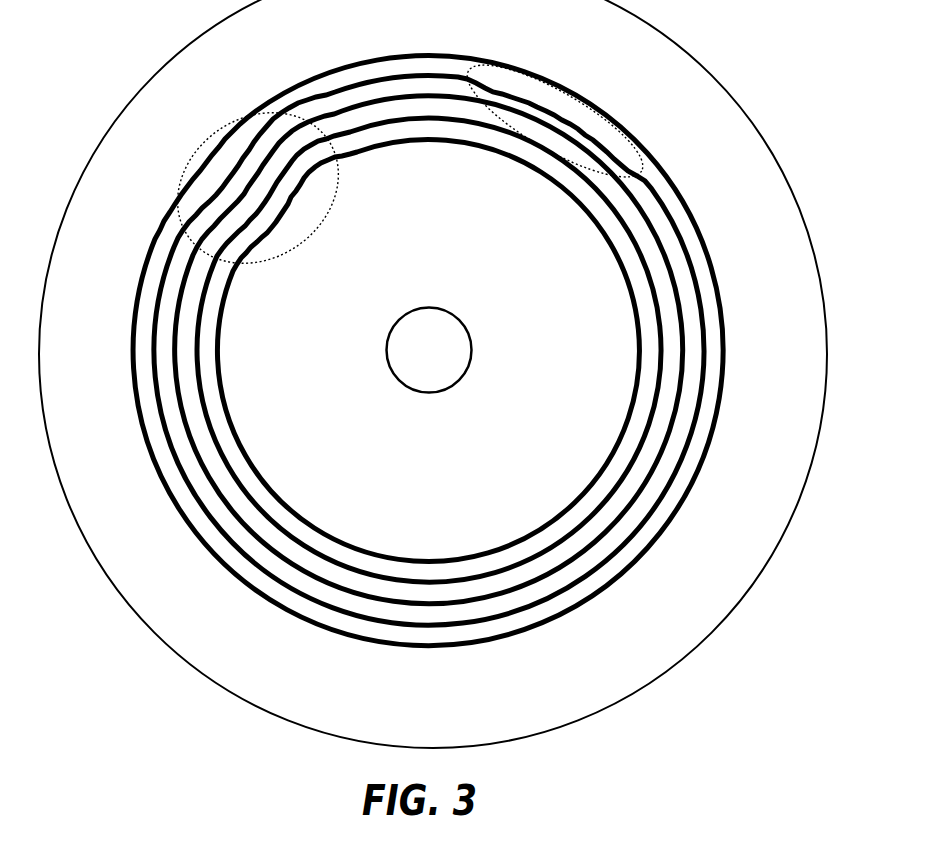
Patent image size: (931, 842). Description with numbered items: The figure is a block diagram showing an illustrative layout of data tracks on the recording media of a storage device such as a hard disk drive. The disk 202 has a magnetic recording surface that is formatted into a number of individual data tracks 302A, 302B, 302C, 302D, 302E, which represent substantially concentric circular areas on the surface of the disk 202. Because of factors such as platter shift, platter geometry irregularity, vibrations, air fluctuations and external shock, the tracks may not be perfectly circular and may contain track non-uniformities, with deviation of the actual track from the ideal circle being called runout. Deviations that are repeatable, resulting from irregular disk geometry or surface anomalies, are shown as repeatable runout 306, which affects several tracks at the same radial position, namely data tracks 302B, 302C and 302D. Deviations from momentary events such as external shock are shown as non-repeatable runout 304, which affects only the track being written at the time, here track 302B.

The disk 202 is at (448, 268).
The data track 302A is at (724, 304).
The data track 302B is at (705, 373).
The data track 302C is at (677, 383).
The data track 302D is at (648, 415).
The data track 302E is at (617, 447).
The non-repeatable runout 304 is at (573, 103).
The repeatable runout 306 is at (229, 144).